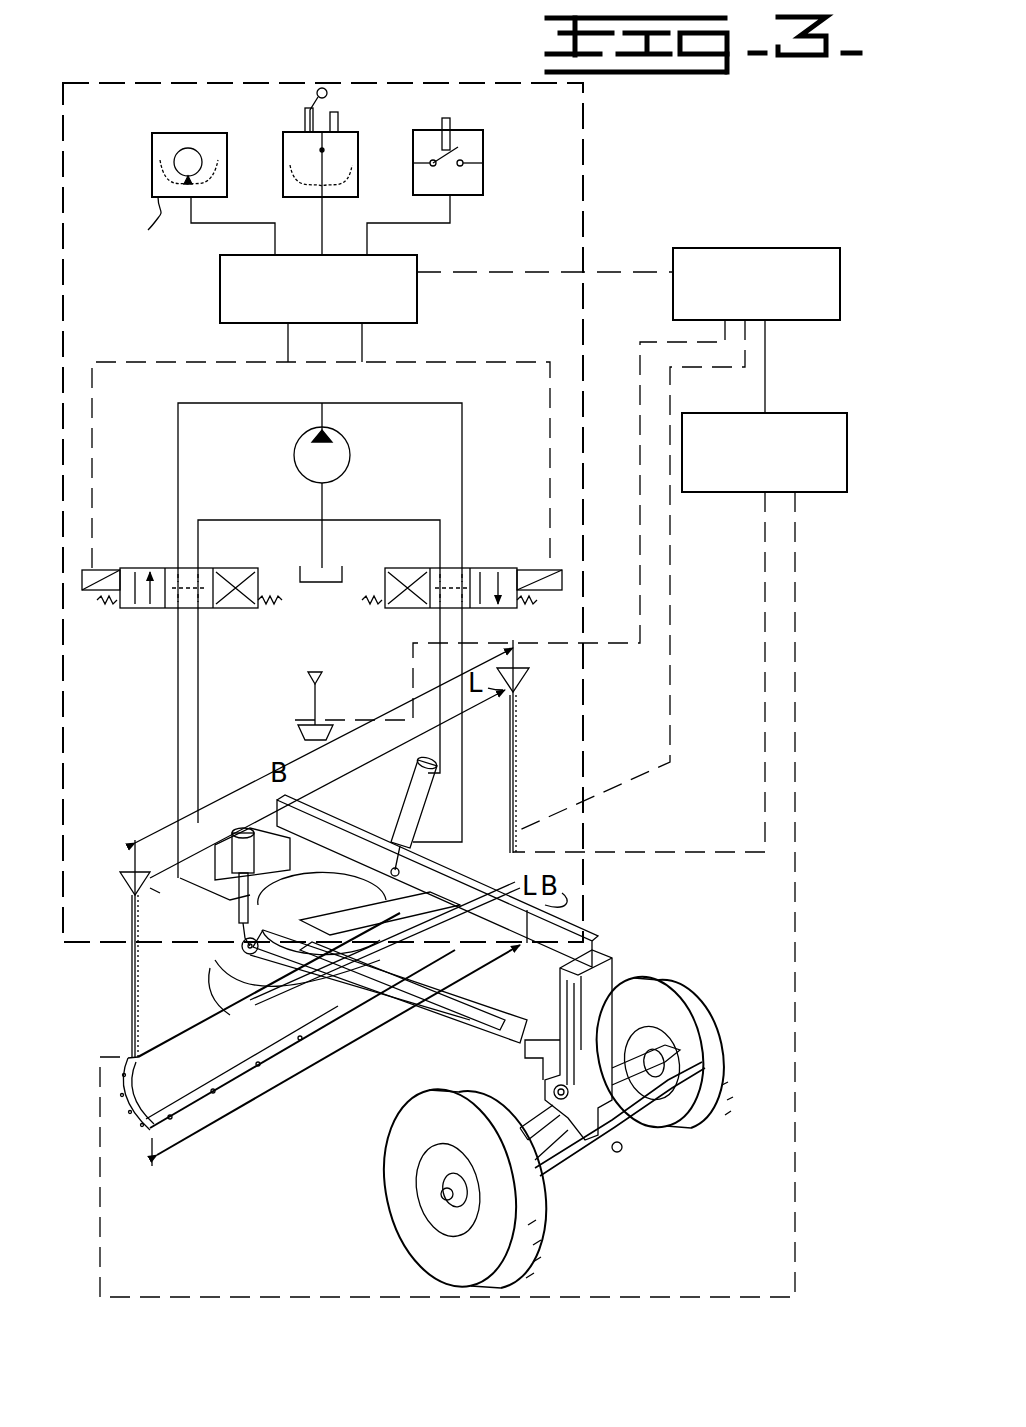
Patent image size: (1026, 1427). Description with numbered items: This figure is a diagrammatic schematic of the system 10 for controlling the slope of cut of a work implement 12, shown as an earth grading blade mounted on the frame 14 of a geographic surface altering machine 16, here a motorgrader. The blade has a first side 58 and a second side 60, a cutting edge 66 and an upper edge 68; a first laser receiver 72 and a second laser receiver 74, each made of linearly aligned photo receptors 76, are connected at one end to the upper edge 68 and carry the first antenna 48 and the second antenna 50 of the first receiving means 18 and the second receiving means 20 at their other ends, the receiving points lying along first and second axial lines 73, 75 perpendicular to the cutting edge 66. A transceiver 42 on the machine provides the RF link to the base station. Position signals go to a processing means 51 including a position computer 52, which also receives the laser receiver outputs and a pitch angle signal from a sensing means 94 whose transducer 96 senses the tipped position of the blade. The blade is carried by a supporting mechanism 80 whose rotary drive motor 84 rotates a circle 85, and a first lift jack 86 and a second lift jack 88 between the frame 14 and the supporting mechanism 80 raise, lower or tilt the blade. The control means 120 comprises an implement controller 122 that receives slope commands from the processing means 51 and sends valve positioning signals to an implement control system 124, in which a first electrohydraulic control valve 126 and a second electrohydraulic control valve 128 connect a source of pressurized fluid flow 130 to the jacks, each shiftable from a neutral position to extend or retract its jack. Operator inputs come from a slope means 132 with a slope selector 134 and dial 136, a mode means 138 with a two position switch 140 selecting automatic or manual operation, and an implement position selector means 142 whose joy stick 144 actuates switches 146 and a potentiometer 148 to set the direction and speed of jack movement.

The method and system for controlling slope of cut 10 is at (780, 157).
The work implement 12 is at (392, 1027).
The frame 14 is at (610, 958).
The geographic surface altering machine 16 is at (630, 1160).
The first receiving means 18 is at (812, 412).
The second receiving means 20 is at (585, 700).
The transceiver 42 is at (296, 735).
The first antenna 48 is at (125, 880).
The second antenna 50 is at (533, 746).
The processing means 51 is at (770, 206).
The position computer 52 is at (826, 248).
The first side 58 is at (253, 1029).
The second side 60 is at (522, 870).
The cutting edge 66 is at (235, 1100).
The upper edge 68 is at (186, 1024).
The first laser receiver 72 is at (127, 948).
The first axial line 73 is at (135, 857).
The second laser receiver 74 is at (539, 774).
The second axial line 75 is at (520, 664).
The photo receptors 76 is at (520, 738).
The supporting mechanism 80 is at (480, 1038).
The rotary drive motor 84 is at (390, 950).
The circle 85 is at (242, 975).
The first lift jack 86 is at (244, 830).
The second lift jack 88 is at (422, 762).
The sensing means 94 is at (378, 912).
The transducer 96 is at (352, 935).
The control means 120 is at (583, 243).
The implement controller 122 is at (417, 282).
The implement control system 124 is at (88, 492).
The first electrohydraulic control valve 126 is at (122, 610).
The second electrohydraulic control valve 128 is at (517, 566).
The source of pressurized fluid flow 130 is at (350, 455).
The slope means 132 is at (173, 172).
The slope selector 134 is at (132, 219).
The dial 136 is at (188, 148).
The mode means 138 is at (466, 174).
The two position switch 140 is at (452, 142).
The implement position selector means 142 is at (326, 150).
The joy stick 144 is at (326, 89).
The switches 146 is at (313, 112).
The potentiometer 148 is at (348, 180).